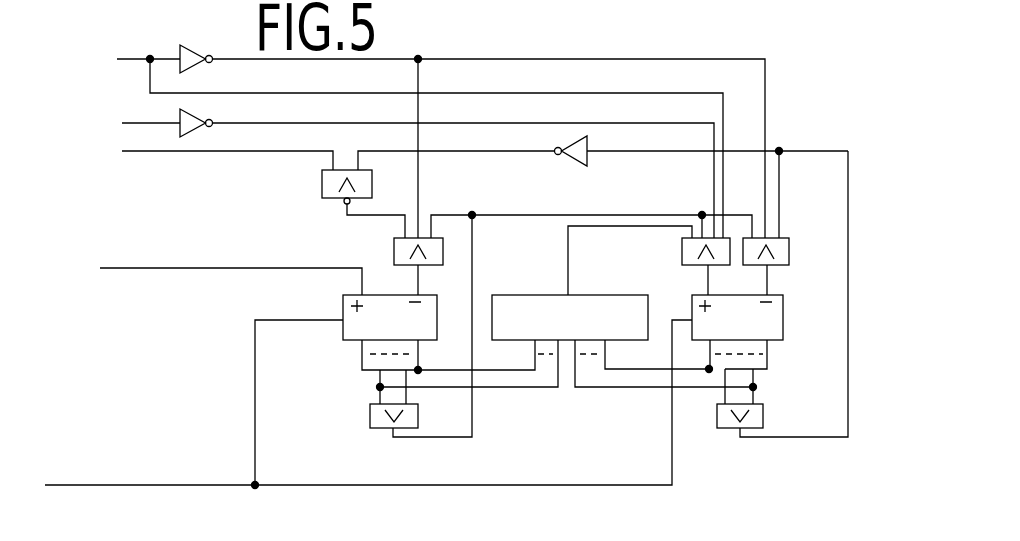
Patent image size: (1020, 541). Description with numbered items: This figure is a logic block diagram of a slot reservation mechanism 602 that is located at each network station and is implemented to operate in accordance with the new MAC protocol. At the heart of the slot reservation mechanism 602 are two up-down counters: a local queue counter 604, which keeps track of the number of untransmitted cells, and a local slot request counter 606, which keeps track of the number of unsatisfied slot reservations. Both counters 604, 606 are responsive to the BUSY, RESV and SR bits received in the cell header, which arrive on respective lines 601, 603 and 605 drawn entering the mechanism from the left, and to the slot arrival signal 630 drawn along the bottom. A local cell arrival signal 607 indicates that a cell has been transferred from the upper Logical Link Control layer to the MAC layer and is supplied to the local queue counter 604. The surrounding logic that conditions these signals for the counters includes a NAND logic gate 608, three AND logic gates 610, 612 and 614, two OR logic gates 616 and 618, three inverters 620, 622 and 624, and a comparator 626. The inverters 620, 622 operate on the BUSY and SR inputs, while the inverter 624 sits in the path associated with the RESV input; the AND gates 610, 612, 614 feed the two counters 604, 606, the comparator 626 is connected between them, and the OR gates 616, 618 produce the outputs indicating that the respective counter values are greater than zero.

The BUSY line 601 is at (148, 21).
The slot reservation mechanism 602 is at (405, 13).
The RESV line 603 is at (140, 153).
The local queue counter 604 is at (343, 305).
The SR line 605 is at (141, 121).
The local slot request counter 606 is at (826, 295).
The local cell arrival signal 607 is at (168, 268).
The NAND logic gate 608 is at (322, 184).
The AND logic gate 610 is at (394, 252).
The AND logic gate 612 is at (682, 252).
The AND logic gate 614 is at (821, 238).
The OR logic gate 616 is at (370, 416).
The OR logic gate 618 is at (801, 408).
The inverter 620 is at (229, 31).
The inverter 622 is at (199, 108).
The inverter 624 is at (574, 163).
The comparator 626 is at (650, 307).
The slot arrival signal 630 is at (222, 484).